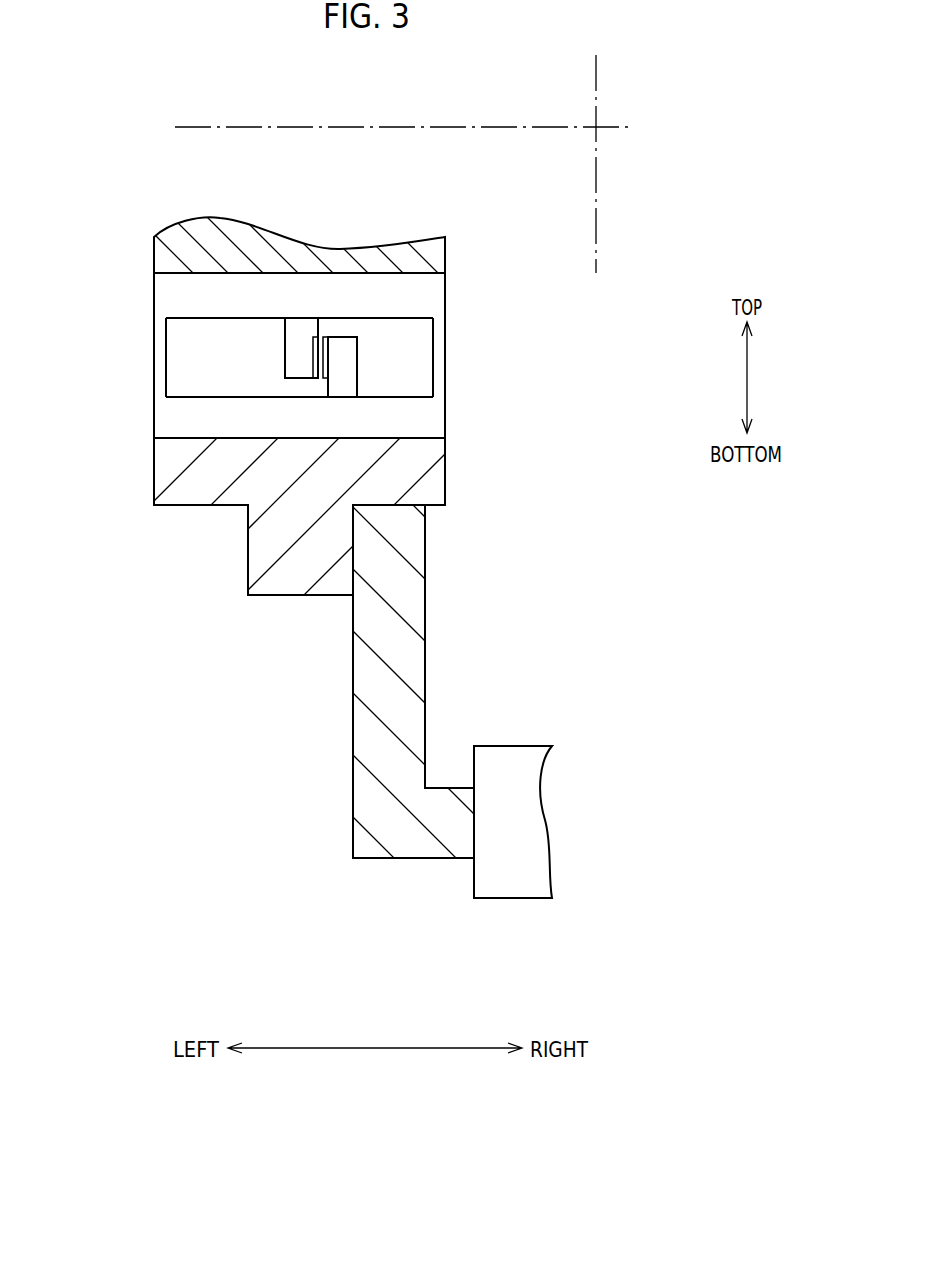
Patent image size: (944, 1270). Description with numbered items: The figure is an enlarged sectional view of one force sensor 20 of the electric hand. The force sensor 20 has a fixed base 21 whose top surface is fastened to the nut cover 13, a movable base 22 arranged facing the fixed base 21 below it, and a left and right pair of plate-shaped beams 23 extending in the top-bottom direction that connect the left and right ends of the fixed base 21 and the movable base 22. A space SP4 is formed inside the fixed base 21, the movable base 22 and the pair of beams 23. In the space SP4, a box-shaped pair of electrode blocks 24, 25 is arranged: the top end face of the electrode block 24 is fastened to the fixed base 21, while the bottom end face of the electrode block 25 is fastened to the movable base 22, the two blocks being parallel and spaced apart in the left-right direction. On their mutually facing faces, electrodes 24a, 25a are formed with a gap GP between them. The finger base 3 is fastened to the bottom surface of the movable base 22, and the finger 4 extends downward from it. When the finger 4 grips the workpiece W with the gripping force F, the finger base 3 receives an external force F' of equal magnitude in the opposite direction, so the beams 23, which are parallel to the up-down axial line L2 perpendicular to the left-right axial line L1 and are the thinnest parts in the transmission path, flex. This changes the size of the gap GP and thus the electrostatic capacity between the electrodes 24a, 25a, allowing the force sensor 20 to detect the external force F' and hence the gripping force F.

The finger base 3 is at (257, 568).
The finger 4 is at (352, 641).
The nut cover 13 is at (445, 248).
The force sensor 20 is at (283, 355).
The fixed base 21 is at (417, 292).
The movable base 22 is at (427, 423).
The beam 23 is at (158, 353).
The electrode block 24 is at (300, 327).
The electrode 24a is at (316, 337).
The electrode block 25 is at (348, 369).
The electrode 25a is at (328, 337).
The space SP4 is at (202, 345).
The gap GP is at (320, 362).
The gripping force F is at (438, 880).
The external force F' is at (423, 552).
The workpiece W is at (518, 898).
The axial line L1 is at (421, 129).
The axial line L2 is at (595, 182).